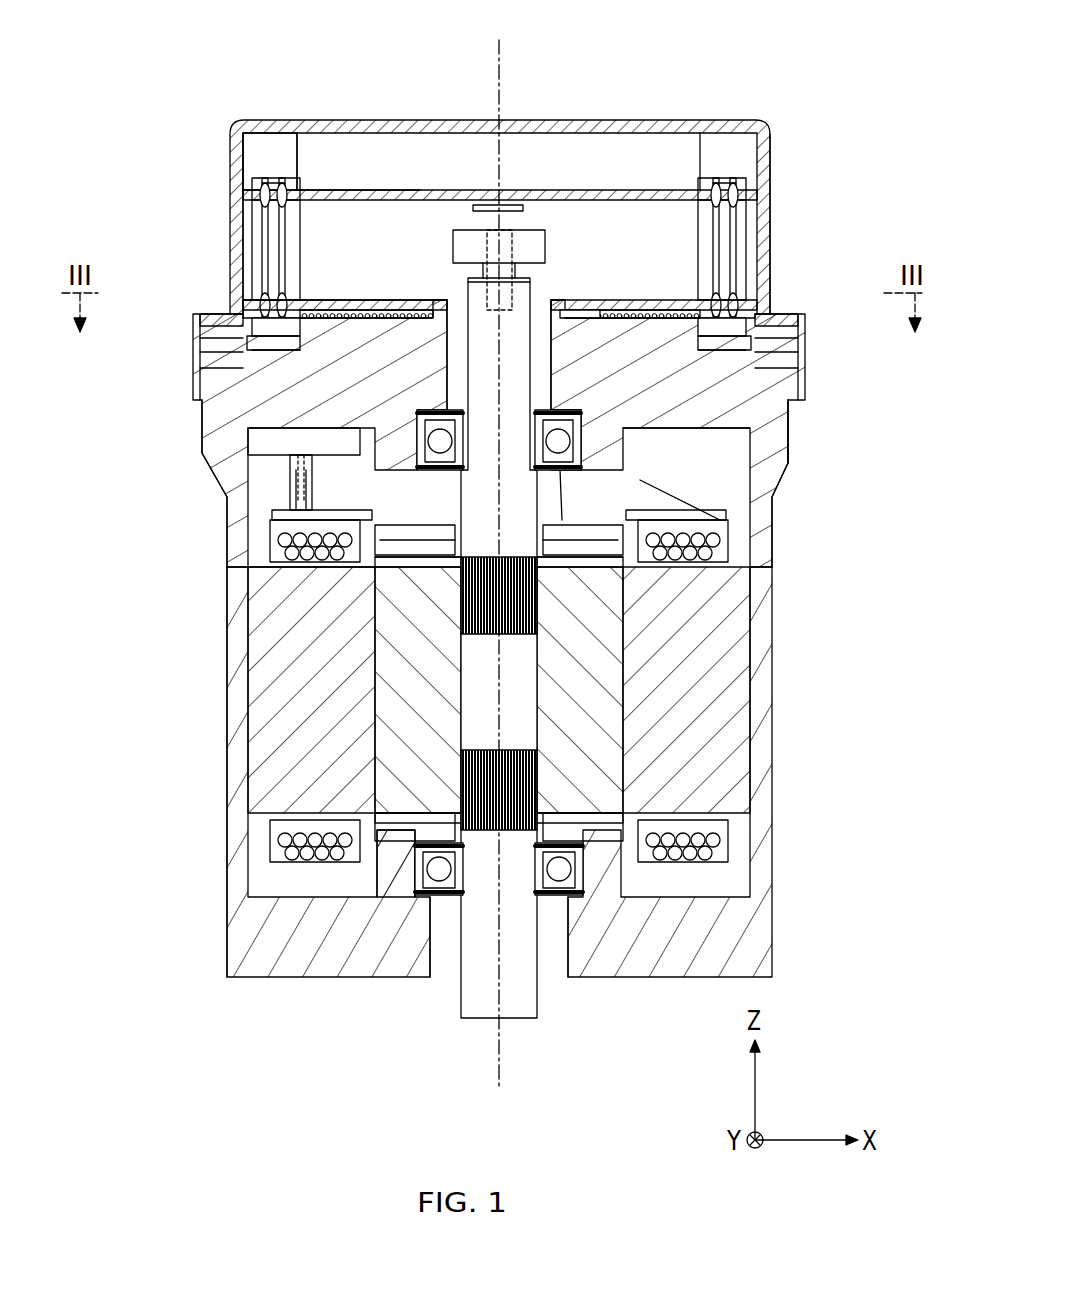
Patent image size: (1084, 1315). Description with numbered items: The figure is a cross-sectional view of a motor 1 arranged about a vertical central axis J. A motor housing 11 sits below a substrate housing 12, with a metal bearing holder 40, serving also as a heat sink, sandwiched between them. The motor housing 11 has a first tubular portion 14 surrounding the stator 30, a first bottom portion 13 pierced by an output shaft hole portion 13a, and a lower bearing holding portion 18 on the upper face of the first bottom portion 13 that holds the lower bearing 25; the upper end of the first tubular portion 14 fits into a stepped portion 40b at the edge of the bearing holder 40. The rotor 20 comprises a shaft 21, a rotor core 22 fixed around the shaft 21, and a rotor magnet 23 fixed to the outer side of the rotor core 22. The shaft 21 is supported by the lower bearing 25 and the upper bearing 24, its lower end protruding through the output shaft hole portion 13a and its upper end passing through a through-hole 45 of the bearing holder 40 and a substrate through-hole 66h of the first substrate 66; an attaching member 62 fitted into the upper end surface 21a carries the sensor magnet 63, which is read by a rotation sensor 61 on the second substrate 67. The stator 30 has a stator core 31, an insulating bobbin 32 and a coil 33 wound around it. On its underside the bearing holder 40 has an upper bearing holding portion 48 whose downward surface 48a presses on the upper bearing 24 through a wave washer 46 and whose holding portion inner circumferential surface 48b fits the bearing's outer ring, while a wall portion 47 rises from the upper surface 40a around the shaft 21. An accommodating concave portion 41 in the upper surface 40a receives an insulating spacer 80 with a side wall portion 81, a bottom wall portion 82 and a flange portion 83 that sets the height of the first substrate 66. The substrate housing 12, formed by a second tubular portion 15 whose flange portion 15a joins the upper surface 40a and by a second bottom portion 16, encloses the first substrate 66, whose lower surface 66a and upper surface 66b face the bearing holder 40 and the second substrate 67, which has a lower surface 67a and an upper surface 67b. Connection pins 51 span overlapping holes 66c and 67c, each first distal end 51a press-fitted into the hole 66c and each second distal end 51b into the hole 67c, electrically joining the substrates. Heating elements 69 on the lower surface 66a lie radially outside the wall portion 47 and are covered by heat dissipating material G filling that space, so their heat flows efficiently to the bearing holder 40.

The motor 1 is at (810, 103).
The motor housing 11 is at (202, 430).
The substrate housing 12 is at (232, 205).
The first bottom portion 13 is at (300, 960).
The output shaft hole portion 13a is at (432, 940).
The first tubular portion 14 is at (232, 760).
The second tubular portion 15 is at (760, 205).
The flange portion 15a is at (764, 314).
The second bottom portion 16 is at (305, 212).
The lower bearing holding portion 18 is at (390, 880).
The rotor 20 is at (598, 848).
The shaft 21 is at (480, 1012).
The upper end surface 21a is at (524, 282).
The rotor core 22 is at (572, 795).
The rotor magnet 23 is at (610, 740).
The upper bearing 24 is at (310, 500).
The lower bearing 25 is at (440, 872).
The stator 30 is at (760, 655).
The stator core 31 is at (722, 675).
The bobbin 32 is at (690, 565).
The coil 33 is at (700, 545).
The bearing holder 40 is at (805, 396).
The upper surface 40a is at (700, 402).
The stepped portion 40b is at (790, 420).
The accommodating concave portion 41 is at (280, 320).
The through-hole 45 is at (445, 385).
The wave washer 46 is at (640, 440).
The wall portion 47 is at (440, 428).
The upper bearing holding portion 48 is at (700, 520).
The downward surface 48a is at (300, 470).
The holding portion inner circumferential surface 48b is at (565, 475).
The connection pin 51 is at (266, 240).
The first distal end 51a is at (262, 300).
The second distal end 51b is at (262, 190).
The rotation sensor 61 is at (510, 230).
The attaching member 62 is at (480, 248).
The sensor magnet 63 is at (478, 205).
The first substrate 66 is at (622, 300).
The lower surface 66a is at (275, 330).
The upper surface 66b is at (418, 300).
The hole 66c is at (282, 300).
The substrate through-hole 66h is at (548, 300).
The second substrate 67 is at (660, 198).
The lower surface 67a is at (320, 200).
The upper surface 67b is at (365, 195).
The hole 67c is at (268, 178).
The heating elements 69 is at (580, 310).
The spacer 80 is at (232, 368).
The side wall portion 81 is at (232, 338).
The bottom wall portion 82 is at (232, 352).
The flange portion 83 is at (230, 320).
The heat dissipating material G is at (600, 312).
The central axis J is at (504, 58).